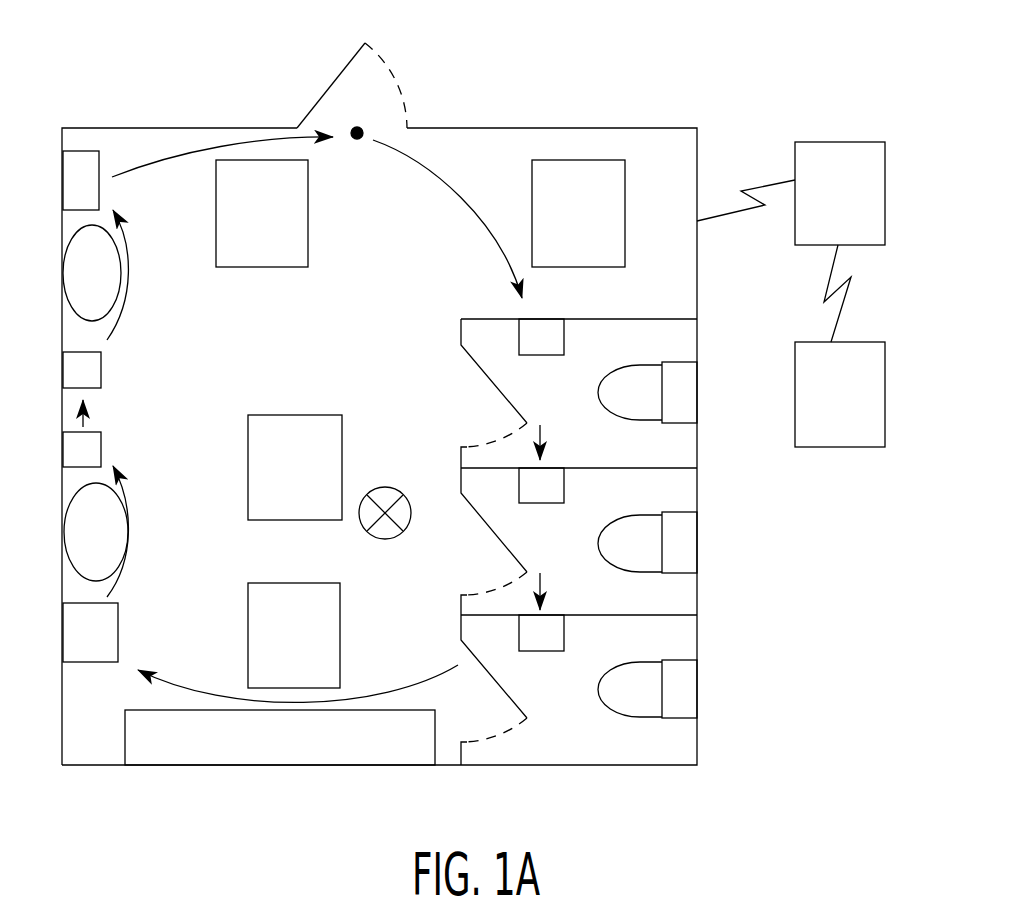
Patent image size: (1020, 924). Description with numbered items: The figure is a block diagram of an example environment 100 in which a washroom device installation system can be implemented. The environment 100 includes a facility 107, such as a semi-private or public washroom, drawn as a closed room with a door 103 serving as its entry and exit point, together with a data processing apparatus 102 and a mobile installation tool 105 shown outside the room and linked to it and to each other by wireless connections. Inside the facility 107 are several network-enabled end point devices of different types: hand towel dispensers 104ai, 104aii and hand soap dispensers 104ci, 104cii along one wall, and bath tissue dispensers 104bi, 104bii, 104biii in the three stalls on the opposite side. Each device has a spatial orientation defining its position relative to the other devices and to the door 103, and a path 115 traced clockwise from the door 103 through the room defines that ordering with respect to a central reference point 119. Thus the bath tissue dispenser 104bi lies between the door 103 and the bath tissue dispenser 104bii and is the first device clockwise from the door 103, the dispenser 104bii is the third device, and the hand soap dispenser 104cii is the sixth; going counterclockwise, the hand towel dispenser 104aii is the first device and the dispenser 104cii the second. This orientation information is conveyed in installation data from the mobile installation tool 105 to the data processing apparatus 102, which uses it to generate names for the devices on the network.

The environment 100 is at (590, 77).
The data processing apparatus 102 is at (860, 405).
The door 103 is at (300, 87).
The hand towel dispenser 104aii is at (99, 188).
The hand towel dispenser 104ai is at (118, 637).
The hand soap dispenser 104cii is at (101, 378).
The hand soap dispenser 104ci is at (101, 447).
The bath tissue dispenser 104bi is at (540, 355).
The bath tissue dispenser 104bii is at (543, 503).
The bath tissue dispenser 104biii is at (543, 651).
The mobile installation tool 105 is at (860, 205).
The facility 107 is at (315, 333).
The path 115 is at (436, 170).
The central reference point 119 is at (393, 488).